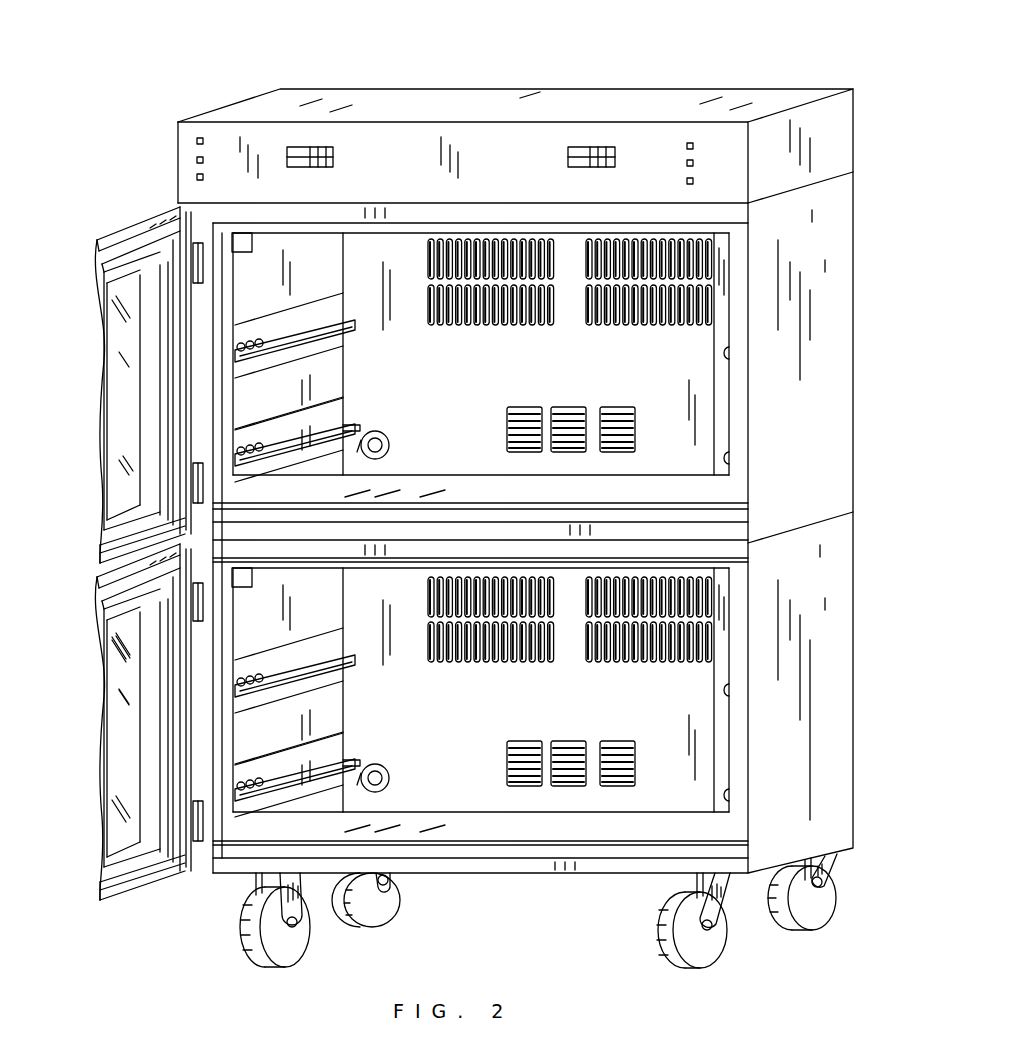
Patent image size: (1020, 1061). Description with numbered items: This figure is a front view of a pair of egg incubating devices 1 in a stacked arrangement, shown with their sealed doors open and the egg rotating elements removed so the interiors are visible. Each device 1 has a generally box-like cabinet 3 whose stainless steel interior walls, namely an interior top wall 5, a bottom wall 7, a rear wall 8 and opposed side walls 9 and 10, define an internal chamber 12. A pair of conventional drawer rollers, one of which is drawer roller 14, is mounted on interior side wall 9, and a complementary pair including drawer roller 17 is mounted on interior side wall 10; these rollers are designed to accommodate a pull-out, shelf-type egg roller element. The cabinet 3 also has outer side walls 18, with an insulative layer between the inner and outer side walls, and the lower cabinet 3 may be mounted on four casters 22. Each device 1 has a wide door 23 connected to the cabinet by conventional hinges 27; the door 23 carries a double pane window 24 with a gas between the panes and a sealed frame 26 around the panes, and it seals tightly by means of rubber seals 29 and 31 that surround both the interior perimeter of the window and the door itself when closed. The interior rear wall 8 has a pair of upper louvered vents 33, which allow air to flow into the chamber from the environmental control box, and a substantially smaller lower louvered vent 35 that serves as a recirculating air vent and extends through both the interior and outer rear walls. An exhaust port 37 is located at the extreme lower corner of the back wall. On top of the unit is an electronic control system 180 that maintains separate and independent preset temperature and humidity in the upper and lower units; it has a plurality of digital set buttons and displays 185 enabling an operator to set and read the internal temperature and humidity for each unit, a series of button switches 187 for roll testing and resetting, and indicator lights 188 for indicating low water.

The egg incubating device 1 is at (630, 74).
The cabinet 3 is at (826, 266).
The interior top wall 5 is at (412, 237).
The bottom wall 7 is at (710, 494).
The rear wall 8 is at (383, 300).
The side wall 9 is at (316, 247).
The side wall 10 is at (727, 395).
The internal chamber 12 is at (332, 342).
The drawer roller 14 is at (342, 432).
The drawer roller 17 is at (731, 353).
The outer side wall 18 is at (815, 216).
The caster 22 is at (312, 945).
The door 23 is at (97, 318).
The double pane window 24 is at (118, 456).
The sealed frame 26 is at (120, 258).
The hinge 27 is at (197, 245).
The rubber seal 29 is at (143, 224).
The rubber seal 31 is at (103, 548).
The upper louvered vent 33 is at (487, 245).
The lower louvered vent 35 is at (522, 427).
The exhaust port 37 is at (390, 444).
The electronic control system 180 is at (452, 105).
The digital set buttons and displays 185 is at (300, 147).
The button switches 187 is at (195, 158).
The indicator lights 188 is at (200, 137).